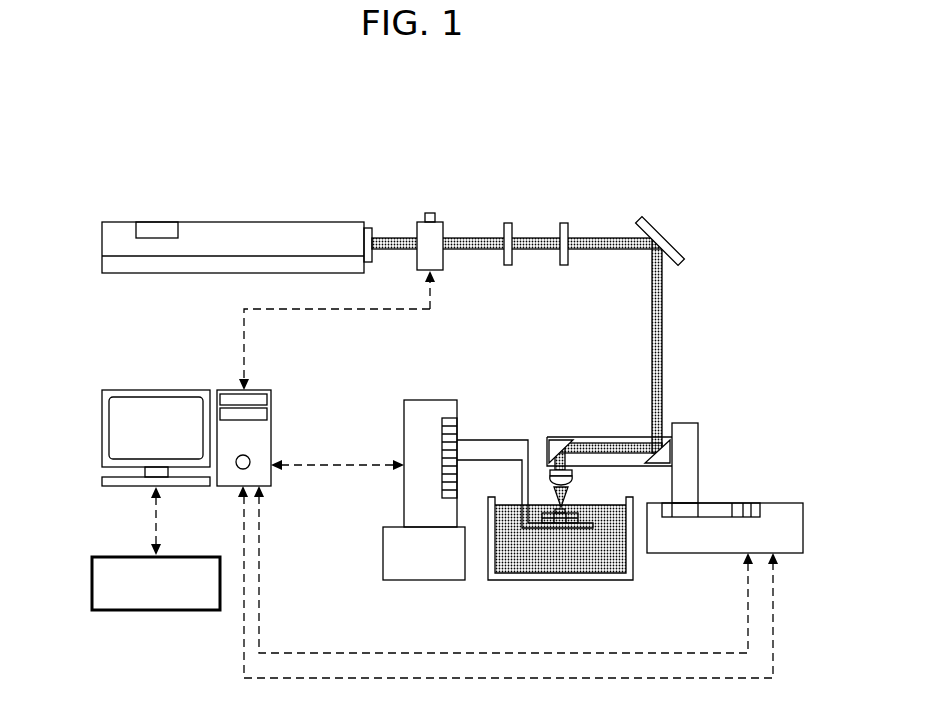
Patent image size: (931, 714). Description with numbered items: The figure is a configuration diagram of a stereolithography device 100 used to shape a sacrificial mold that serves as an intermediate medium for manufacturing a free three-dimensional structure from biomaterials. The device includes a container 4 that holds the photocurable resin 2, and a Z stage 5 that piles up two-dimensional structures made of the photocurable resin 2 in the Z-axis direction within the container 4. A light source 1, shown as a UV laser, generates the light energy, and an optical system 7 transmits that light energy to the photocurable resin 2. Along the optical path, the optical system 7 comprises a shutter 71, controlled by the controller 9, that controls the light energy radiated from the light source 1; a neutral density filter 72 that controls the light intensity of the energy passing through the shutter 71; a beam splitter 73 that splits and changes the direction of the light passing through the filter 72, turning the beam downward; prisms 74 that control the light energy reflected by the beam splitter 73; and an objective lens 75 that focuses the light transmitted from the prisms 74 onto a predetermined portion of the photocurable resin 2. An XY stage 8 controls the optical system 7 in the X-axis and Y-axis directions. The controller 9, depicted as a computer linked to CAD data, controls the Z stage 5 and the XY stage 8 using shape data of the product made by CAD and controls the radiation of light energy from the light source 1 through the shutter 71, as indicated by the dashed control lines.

The stereolithography device 100 is at (430, 128).
The light source 1 is at (262, 222).
The optical system 7 is at (738, 318).
The shutter 71 is at (441, 222).
The neutral density (ND) filter 72 is at (508, 222).
The beam splitter 73 is at (651, 222).
The prisms 74 is at (652, 443).
The objective lens 75 is at (551, 475).
The Z stage 5 is at (420, 400).
The container 4 is at (541, 580).
The photocurable resin 2 is at (588, 560).
The XY stage 8 is at (775, 503).
The controller 9 is at (86, 526).